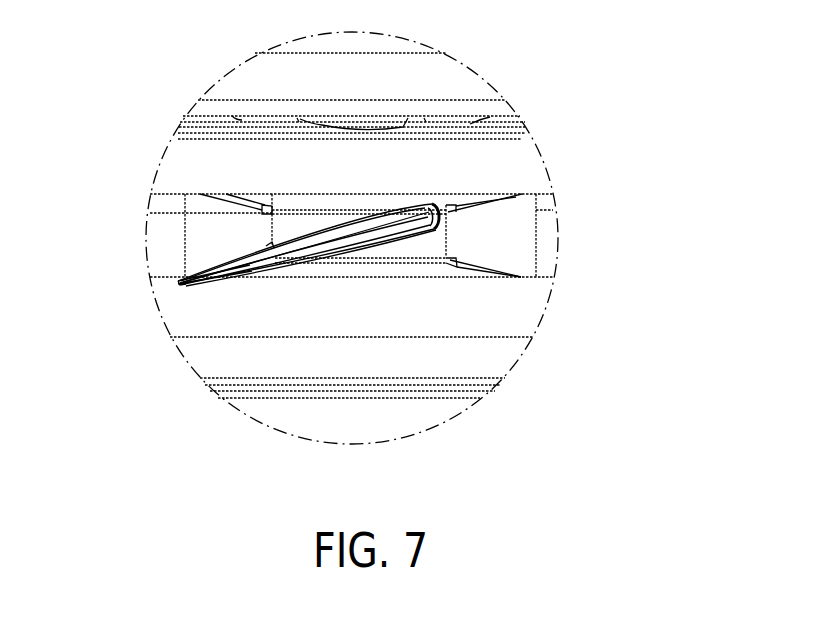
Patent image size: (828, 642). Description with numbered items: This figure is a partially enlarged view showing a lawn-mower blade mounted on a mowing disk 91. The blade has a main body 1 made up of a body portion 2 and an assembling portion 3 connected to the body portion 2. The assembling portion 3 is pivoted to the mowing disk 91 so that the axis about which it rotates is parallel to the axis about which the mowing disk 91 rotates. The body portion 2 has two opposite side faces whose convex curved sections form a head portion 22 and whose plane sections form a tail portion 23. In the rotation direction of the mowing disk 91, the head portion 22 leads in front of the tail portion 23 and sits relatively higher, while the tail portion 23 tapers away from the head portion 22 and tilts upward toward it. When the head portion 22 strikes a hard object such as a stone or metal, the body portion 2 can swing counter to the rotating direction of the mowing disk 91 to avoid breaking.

The main body 1 is at (341, 262).
The body portion 2 is at (393, 220).
The head portion 22 is at (420, 218).
The tail portion 23 is at (246, 275).
The assembling portion 3 is at (292, 222).
The mowing disk 91 is at (200, 168).